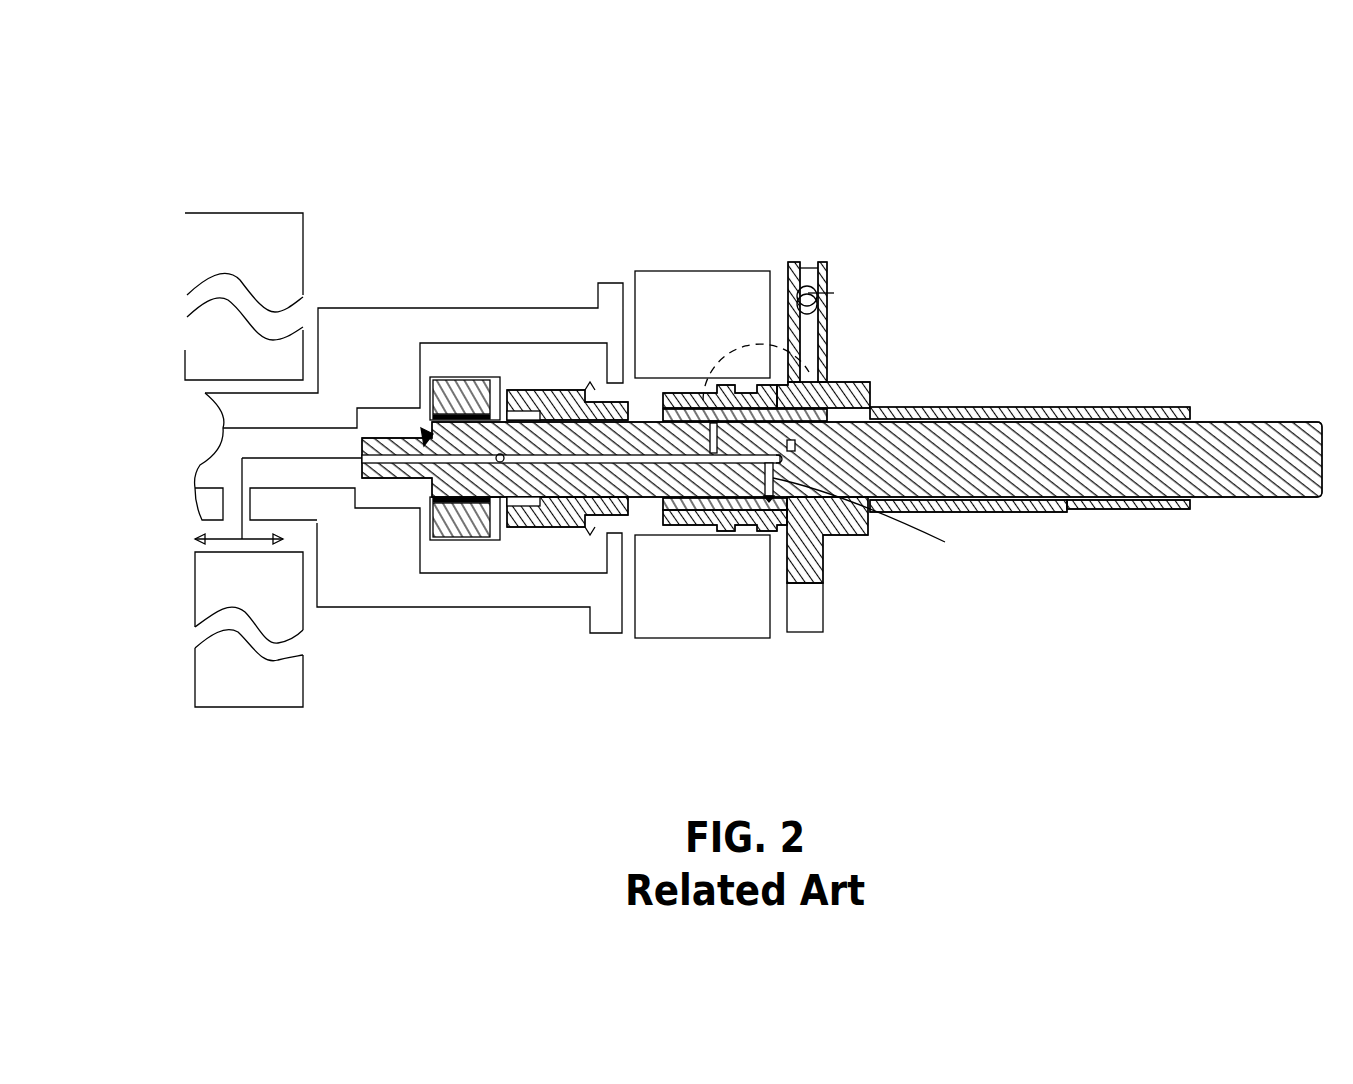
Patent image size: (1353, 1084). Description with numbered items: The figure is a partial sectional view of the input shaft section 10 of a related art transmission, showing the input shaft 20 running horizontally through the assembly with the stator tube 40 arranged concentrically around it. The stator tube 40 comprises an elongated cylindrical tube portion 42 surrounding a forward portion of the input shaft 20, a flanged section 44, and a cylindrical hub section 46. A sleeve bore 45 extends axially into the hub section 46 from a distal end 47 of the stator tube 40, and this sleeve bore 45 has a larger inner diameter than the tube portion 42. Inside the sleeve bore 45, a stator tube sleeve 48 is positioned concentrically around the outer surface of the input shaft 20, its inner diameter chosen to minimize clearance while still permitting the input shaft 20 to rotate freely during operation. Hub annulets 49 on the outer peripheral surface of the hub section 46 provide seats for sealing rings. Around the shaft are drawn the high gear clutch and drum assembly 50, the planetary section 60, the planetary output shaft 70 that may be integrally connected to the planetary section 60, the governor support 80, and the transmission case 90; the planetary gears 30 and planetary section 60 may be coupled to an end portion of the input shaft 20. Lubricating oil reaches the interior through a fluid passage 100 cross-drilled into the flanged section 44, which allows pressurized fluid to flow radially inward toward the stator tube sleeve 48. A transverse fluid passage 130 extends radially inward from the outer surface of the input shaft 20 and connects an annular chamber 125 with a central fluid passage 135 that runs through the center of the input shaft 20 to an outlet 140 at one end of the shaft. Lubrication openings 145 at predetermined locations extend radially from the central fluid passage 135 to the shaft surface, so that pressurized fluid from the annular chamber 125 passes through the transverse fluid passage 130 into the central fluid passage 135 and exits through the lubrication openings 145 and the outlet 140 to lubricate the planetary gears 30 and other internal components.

The input shaft section 10 is at (1026, 578).
The input shaft 20 is at (1217, 420).
The planetary gears 30 is at (647, 708).
The stator tube 40 is at (1130, 515).
The tube portion 42 is at (937, 402).
The flanged section 44 is at (794, 288).
The sleeve bore 45 is at (687, 502).
The cylindrical hub section 46 is at (745, 406).
The distal end 47 is at (657, 520).
The stator tube sleeve 48 is at (800, 507).
The hub annulets 49 is at (765, 498).
The high gear clutch and drum assembly 50 is at (674, 266).
The planetary section 60 is at (407, 306).
The planetary output shaft 70 is at (267, 397).
The governor support 80 is at (305, 610).
The transmission case 90 is at (305, 693).
The fluid passage 100 is at (829, 281).
The annular chamber 125 is at (783, 515).
The transverse fluid passage 130 is at (887, 519).
The central fluid passage 135 is at (465, 460).
The outlet 140 is at (437, 460).
The lubrication openings 145 is at (437, 455).